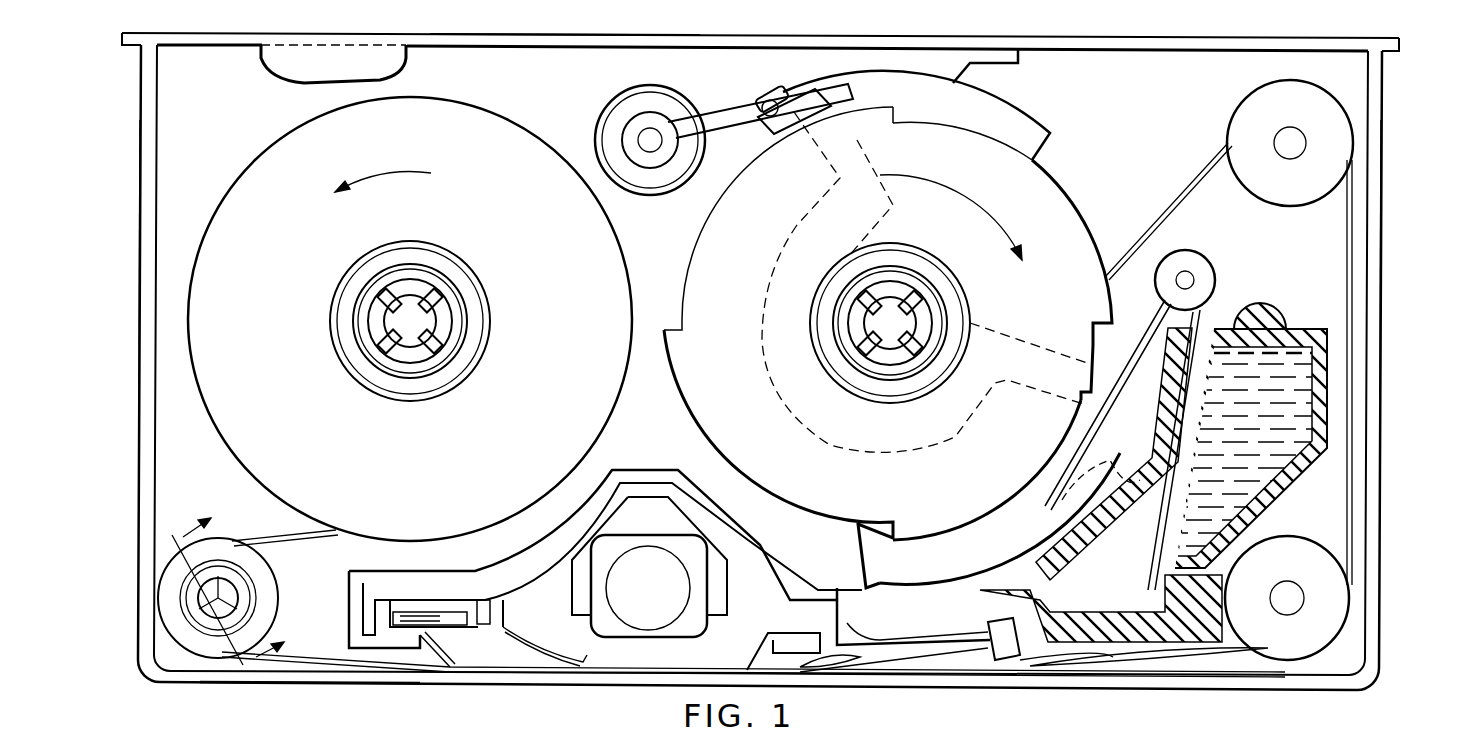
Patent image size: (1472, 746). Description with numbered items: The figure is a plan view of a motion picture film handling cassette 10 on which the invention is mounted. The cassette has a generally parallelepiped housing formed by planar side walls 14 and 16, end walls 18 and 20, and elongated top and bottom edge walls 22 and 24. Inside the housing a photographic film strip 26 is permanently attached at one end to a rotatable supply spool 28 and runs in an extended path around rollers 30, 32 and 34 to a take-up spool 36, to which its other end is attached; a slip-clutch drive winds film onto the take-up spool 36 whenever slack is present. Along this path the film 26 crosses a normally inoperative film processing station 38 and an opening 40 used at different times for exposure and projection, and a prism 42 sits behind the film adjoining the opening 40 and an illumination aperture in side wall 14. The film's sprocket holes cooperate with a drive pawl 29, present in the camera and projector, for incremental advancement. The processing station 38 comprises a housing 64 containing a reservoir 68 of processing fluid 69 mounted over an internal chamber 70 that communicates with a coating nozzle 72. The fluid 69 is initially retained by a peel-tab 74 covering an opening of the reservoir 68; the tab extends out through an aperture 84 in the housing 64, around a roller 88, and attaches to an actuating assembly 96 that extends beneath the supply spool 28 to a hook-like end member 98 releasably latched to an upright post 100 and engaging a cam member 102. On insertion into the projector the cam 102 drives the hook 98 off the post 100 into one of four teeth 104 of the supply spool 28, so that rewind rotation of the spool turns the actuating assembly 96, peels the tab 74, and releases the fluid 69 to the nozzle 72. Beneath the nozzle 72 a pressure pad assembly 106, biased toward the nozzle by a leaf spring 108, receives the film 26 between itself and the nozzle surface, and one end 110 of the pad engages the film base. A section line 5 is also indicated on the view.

The section line 5- 5 is at (235, 586).
The cassette 10 is at (1396, 662).
The side wall 14 is at (302, 72).
The side wall 16 is at (393, 65).
The end wall 18 is at (148, 138).
The end wall 20 is at (1376, 242).
The top edge wall 22 is at (533, 46).
The bottom edge wall 24 is at (312, 678).
The photographic film strip 26 is at (1202, 172).
The supply spool 28 is at (1064, 226).
The drive pawl 29 is at (610, 680).
The roller 30 is at (1322, 104).
The roller 32 is at (1312, 632).
The roller 34 is at (262, 597).
The take-up spool 36 is at (610, 268).
The film processing station 38 is at (1260, 318).
The opening 40 is at (515, 678).
The prism 42 is at (655, 562).
The housing 64 is at (1306, 330).
The reservoir 68 is at (1296, 405).
The processing fluid 69 is at (1286, 398).
The internal chamber 70 is at (1125, 580).
The coating nozzle 72 is at (1112, 636).
The peel-tab 74 is at (1192, 326).
The aperture 84 is at (1204, 326).
The roller 88 is at (1192, 265).
The actuating assembly 96 is at (858, 160).
The hook-like end member 98 is at (777, 84).
The upright post 100 is at (800, 96).
The cam member 102 is at (714, 121).
The teeth 104 is at (893, 114).
The pressure pad assembly 106 is at (1134, 688).
The leaf spring 108 is at (1045, 668).
The end of pad 110 is at (1250, 668).